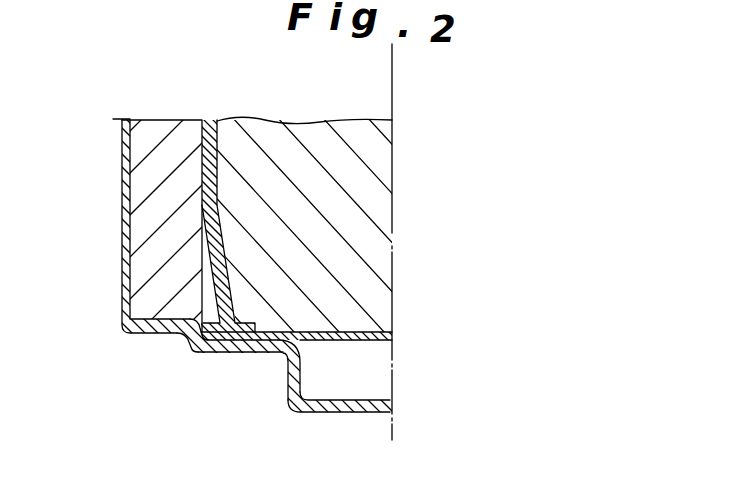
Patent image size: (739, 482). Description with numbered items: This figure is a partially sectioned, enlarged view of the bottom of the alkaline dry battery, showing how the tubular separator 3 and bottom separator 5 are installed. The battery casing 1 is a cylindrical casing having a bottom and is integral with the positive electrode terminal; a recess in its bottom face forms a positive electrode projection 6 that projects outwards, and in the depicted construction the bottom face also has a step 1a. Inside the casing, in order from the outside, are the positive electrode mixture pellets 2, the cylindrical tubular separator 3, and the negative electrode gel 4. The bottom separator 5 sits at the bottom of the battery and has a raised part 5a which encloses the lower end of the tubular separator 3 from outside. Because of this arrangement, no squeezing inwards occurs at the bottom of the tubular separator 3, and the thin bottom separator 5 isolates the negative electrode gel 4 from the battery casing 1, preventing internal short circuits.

The battery casing 1 is at (122, 168).
The step 1a is at (222, 353).
The positive electrode mixture pellets 2 is at (150, 233).
The tubular separator 3 is at (202, 142).
The negative electrode gel 4 is at (262, 143).
The bottom separator 5 is at (338, 338).
The raised part 5a is at (204, 292).
The positive electrode projection 6 is at (328, 414).